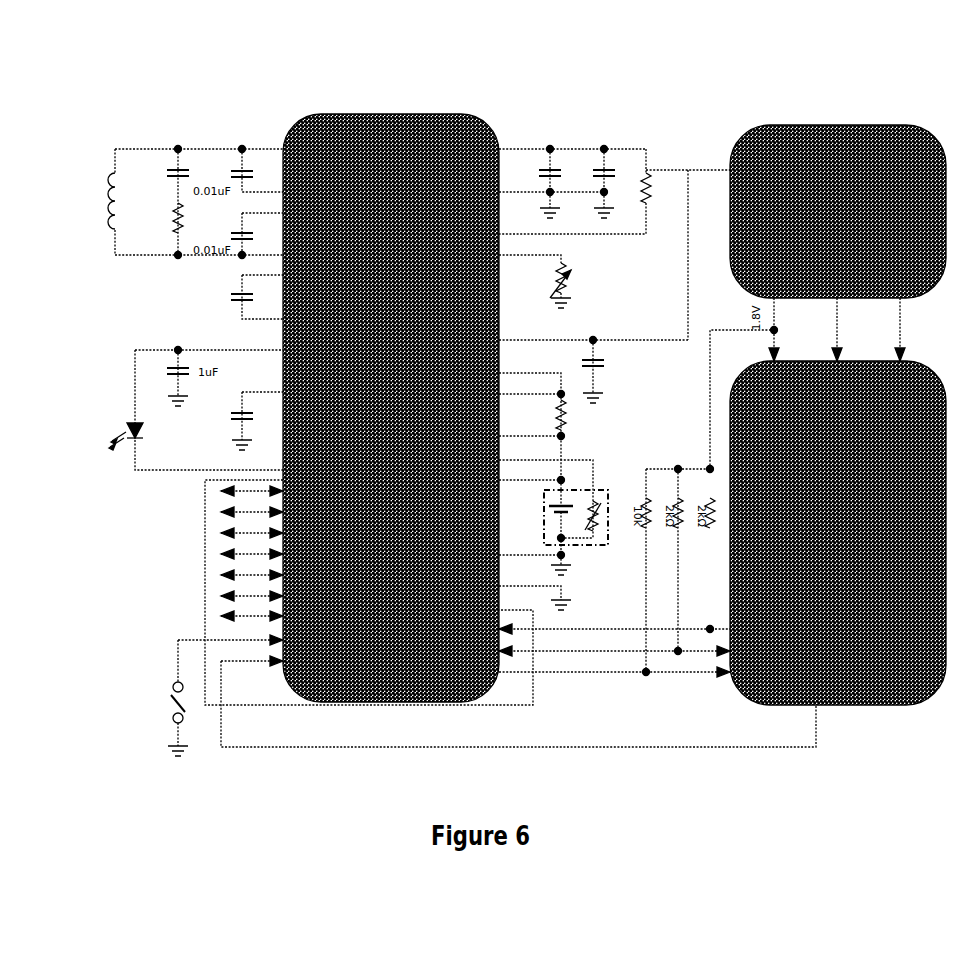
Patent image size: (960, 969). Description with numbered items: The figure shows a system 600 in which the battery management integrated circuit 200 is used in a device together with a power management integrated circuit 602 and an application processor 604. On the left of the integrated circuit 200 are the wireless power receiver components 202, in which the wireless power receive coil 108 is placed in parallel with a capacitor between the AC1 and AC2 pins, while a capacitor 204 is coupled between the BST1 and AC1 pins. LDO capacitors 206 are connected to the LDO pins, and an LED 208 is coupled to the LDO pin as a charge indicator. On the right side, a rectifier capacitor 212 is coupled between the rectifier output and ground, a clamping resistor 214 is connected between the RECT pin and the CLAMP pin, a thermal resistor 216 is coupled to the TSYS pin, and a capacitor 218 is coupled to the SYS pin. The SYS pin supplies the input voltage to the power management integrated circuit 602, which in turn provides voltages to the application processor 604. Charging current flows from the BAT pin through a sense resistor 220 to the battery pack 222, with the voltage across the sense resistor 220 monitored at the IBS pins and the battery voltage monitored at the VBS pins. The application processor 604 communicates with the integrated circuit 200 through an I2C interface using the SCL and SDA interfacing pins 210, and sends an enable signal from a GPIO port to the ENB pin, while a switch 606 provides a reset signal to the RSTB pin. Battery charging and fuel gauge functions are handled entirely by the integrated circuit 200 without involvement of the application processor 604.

The system 600 is at (80, 92).
The wireless power receive coil 108 is at (97, 196).
The wireless power receiver components 202 is at (192, 198).
The capacitor 204 is at (221, 287).
The LDO capacitors 206 is at (200, 423).
The LED 208 is at (115, 441).
The battery management integrated circuit 200 is at (391, 408).
The interfacing pins 210 is at (369, 592).
The rectifier capacitor 212 is at (563, 155).
The clamping resistor 214 is at (642, 168).
The thermal resistor 216 is at (566, 261).
The capacitor 218 is at (589, 346).
The sense resistor 220 is at (573, 412).
The battery pack 222 is at (567, 520).
The power management integrated circuit 602 is at (838, 211).
The application processor 604 is at (838, 533).
The switch 606 is at (153, 675).